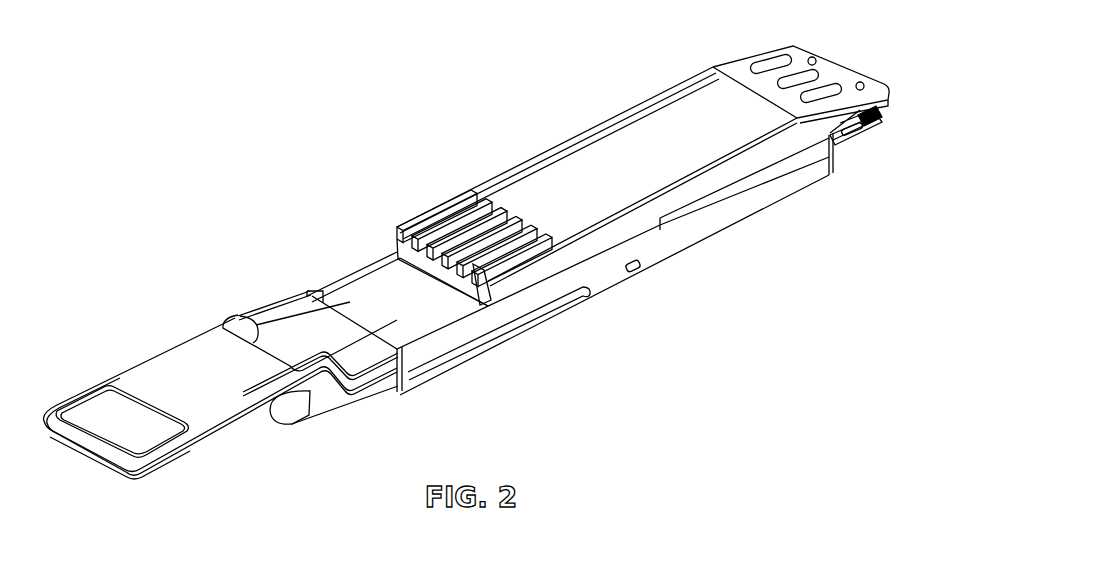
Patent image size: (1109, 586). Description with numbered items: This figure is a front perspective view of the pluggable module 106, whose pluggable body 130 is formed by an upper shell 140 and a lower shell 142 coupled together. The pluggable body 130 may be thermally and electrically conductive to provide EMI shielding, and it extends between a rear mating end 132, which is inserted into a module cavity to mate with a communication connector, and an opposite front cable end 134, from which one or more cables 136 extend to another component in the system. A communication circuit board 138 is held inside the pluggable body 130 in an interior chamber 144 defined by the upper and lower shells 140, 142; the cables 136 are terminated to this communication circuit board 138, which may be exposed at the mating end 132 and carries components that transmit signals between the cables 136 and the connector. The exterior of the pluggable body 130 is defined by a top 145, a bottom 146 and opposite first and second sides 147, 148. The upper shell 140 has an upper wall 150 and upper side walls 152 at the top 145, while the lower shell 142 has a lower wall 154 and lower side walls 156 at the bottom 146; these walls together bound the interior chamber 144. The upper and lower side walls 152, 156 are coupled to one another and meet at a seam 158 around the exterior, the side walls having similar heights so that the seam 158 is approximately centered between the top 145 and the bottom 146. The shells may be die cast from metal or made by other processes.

The pluggable module 106 is at (340, 195).
The pluggable body 130 is at (717, 218).
The mating end 132 is at (858, 73).
The cable end 134 is at (393, 387).
The cables 136 is at (293, 330).
The communication circuit board 138 is at (880, 120).
The upper shell 140 is at (577, 252).
The lower shell 142 is at (620, 258).
The interior chamber 144 is at (833, 162).
The top 145 is at (607, 118).
The bottom 146 is at (768, 207).
The first side 147 is at (343, 273).
The second side 148 is at (667, 240).
The upper wall 150 is at (693, 107).
The upper side walls 152 is at (540, 153).
The lower wall 154 is at (703, 242).
The lower side walls 156 is at (793, 178).
The seam 158 is at (703, 223).